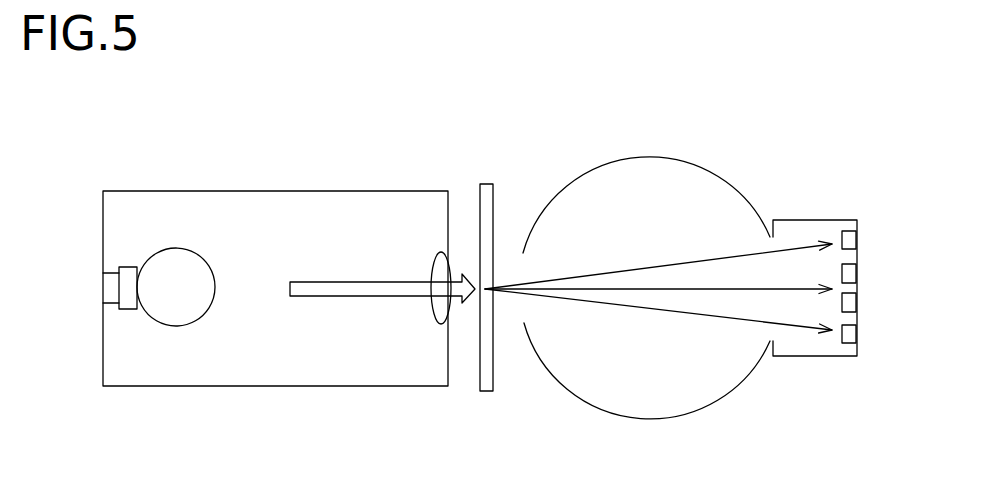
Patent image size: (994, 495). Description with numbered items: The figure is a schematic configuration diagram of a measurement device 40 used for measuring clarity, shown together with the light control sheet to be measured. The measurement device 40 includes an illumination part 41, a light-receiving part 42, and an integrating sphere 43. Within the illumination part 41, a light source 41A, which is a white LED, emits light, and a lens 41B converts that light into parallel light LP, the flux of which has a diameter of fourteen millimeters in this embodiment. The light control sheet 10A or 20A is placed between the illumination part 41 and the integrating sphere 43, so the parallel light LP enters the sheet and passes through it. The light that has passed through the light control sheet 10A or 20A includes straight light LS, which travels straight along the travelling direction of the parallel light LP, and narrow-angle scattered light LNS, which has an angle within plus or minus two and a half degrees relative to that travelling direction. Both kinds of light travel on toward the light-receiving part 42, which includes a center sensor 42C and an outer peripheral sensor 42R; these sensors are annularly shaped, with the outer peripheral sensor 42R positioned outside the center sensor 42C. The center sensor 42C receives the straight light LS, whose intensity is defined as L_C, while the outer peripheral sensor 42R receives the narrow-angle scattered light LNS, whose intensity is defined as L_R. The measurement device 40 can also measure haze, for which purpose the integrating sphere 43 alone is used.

The measurement device 40 is at (784, 136).
The illumination part 41 is at (280, 190).
The light source 41A is at (168, 328).
The lens 41B is at (432, 306).
The parallel light LP is at (455, 278).
The light control sheet 10A is at (516, 312).
The light control sheet 20A is at (485, 393).
The integrating sphere 43 is at (652, 420).
The light-receiving part 42 is at (815, 218).
The outer peripheral sensor 42R is at (858, 241).
The center sensor 42C is at (859, 264).
The narrow-angle scattered light LNS is at (663, 263).
The straight light LS is at (712, 288).